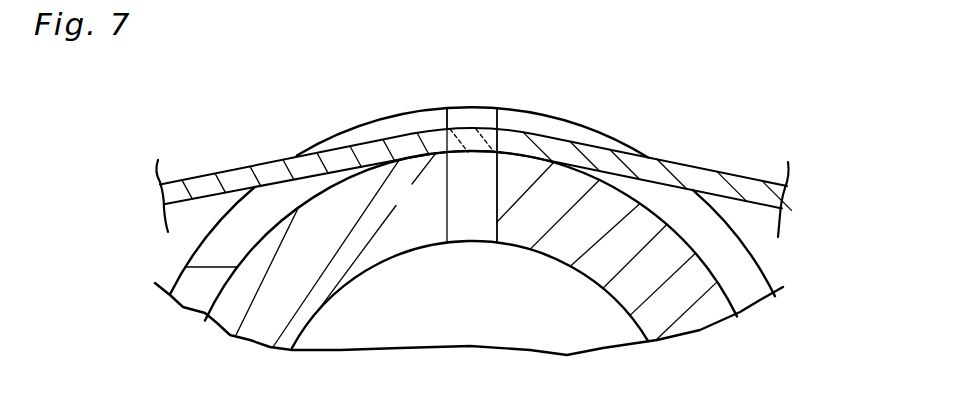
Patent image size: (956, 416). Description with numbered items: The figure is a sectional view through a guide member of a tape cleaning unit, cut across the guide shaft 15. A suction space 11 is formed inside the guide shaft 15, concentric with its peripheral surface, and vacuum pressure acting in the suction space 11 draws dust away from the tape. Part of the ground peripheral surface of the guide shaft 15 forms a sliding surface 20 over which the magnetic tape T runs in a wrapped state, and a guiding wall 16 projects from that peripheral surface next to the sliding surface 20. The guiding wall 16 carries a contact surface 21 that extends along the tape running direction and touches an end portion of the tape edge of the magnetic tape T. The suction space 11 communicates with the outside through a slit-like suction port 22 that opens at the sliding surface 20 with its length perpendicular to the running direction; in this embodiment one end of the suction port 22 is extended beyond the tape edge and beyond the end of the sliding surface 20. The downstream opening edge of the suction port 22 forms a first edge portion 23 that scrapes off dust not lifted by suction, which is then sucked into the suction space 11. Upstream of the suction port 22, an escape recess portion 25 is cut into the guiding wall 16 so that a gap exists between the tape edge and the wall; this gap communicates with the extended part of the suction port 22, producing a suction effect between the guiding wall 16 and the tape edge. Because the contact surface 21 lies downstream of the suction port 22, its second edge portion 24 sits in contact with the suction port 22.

The suction space 11 is at (457, 336).
The guide shaft 15 is at (713, 310).
The guiding wall 16 is at (758, 265).
The sliding surface 20 is at (527, 140).
The contact surface 21 is at (518, 125).
The suction port 22 is at (452, 164).
The first edge portion 23 is at (493, 153).
The second edge portion 24 is at (470, 128).
The escape recess portion 25 is at (227, 248).
The magnetic tape T is at (228, 170).